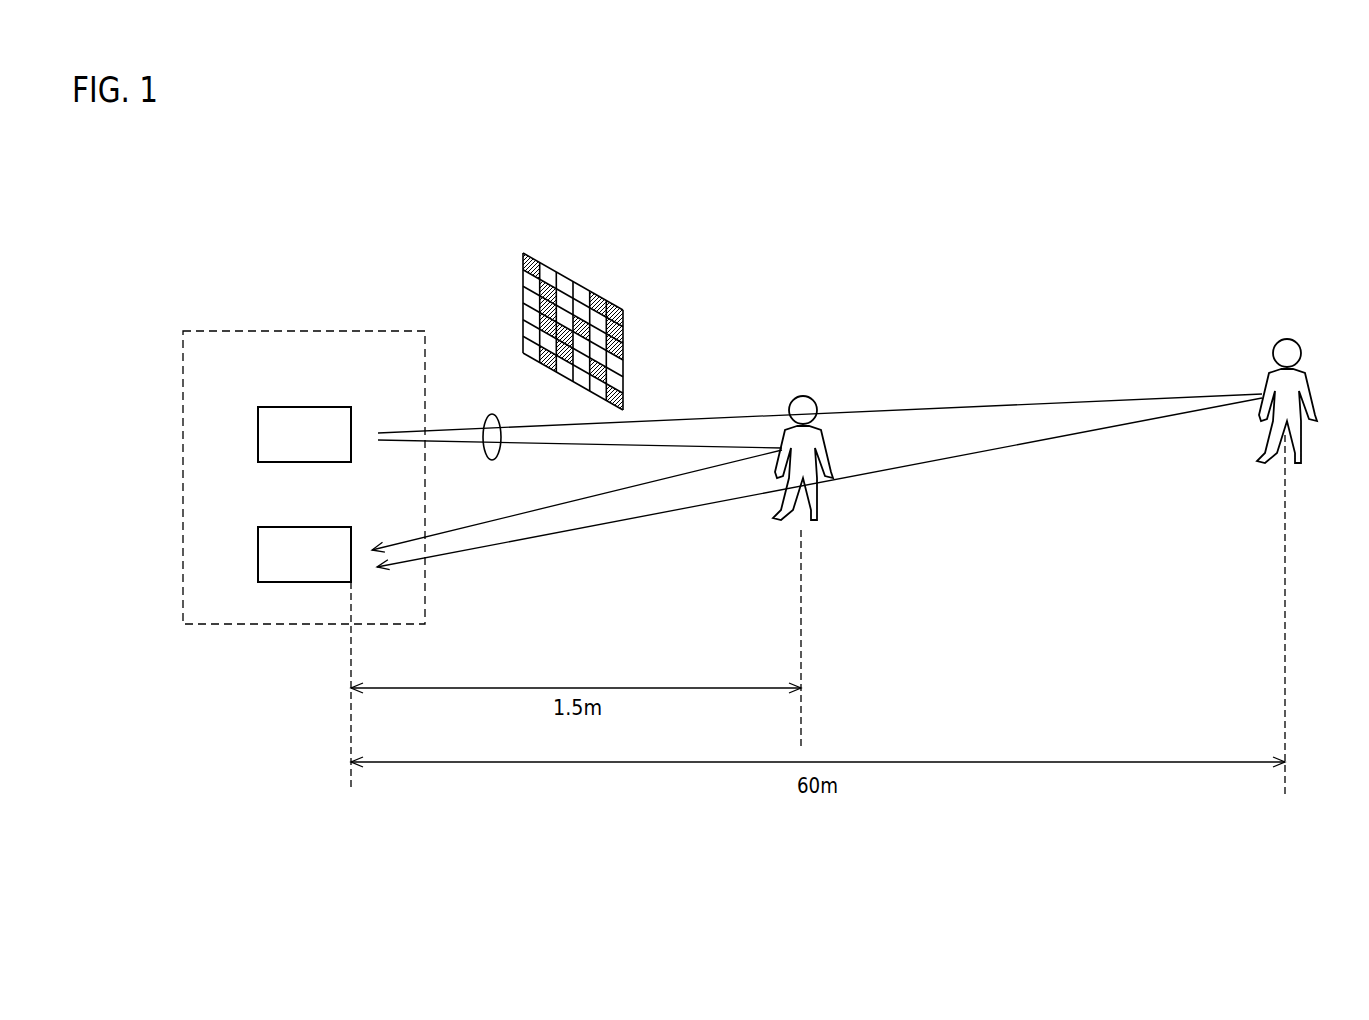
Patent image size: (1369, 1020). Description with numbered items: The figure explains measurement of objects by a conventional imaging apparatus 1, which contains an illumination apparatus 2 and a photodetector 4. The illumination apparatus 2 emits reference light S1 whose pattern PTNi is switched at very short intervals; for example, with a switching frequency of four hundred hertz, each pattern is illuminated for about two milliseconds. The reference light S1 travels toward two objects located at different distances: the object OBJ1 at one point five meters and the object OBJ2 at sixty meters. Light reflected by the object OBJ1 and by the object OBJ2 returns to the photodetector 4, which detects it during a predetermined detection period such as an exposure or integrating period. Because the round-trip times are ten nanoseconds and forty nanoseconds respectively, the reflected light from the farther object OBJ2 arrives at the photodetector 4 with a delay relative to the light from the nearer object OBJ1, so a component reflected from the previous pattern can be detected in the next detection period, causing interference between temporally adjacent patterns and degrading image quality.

The imaging apparatus 1 is at (388, 331).
The illumination apparatus 2 is at (305, 407).
The photodetector 4 is at (305, 527).
The pattern PTNi is at (582, 282).
The reference light S1 is at (492, 414).
The object OBJ1 is at (803, 396).
The object OBJ2 is at (1287, 339).